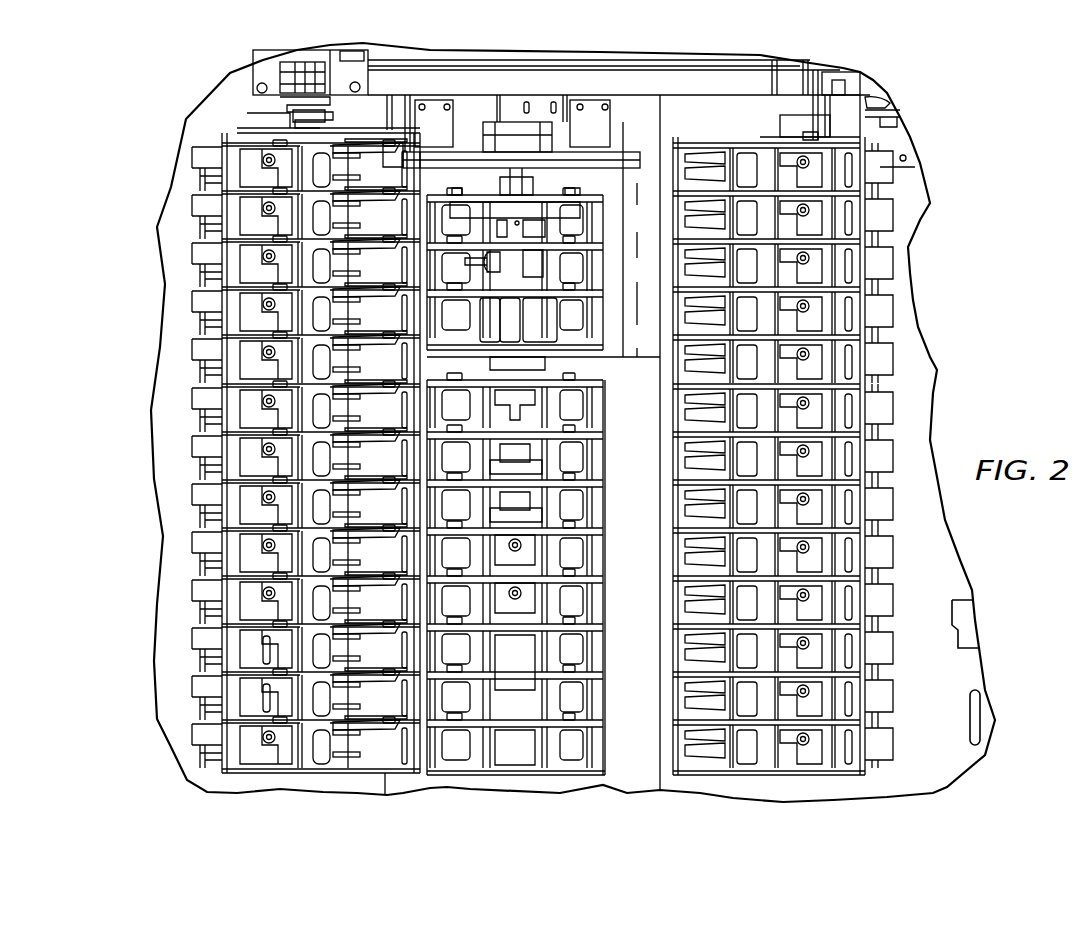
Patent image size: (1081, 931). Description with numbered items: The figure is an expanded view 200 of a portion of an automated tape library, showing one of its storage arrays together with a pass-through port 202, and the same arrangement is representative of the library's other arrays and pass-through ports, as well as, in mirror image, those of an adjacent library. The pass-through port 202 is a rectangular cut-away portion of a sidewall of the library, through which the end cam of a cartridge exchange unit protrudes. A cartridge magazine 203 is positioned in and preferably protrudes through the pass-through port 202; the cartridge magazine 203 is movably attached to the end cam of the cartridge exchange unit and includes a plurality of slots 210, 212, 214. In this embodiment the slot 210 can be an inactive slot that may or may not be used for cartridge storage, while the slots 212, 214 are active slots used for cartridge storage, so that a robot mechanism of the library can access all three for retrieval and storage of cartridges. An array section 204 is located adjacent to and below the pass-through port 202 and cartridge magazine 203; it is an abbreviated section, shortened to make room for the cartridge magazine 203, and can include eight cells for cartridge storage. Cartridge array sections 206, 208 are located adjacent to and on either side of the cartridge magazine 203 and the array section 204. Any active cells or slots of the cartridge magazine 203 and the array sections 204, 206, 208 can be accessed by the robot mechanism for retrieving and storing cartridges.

The expanded view 200 is at (172, 84).
The pass-through port 202 is at (578, 177).
The cartridge magazine 203 is at (592, 196).
The array section 204 is at (605, 755).
The cartridge array section 206 is at (192, 206).
The cartridge array section 208 is at (890, 263).
The slot 210 is at (605, 225).
The slot 212 is at (606, 272).
The slot 214 is at (604, 328).